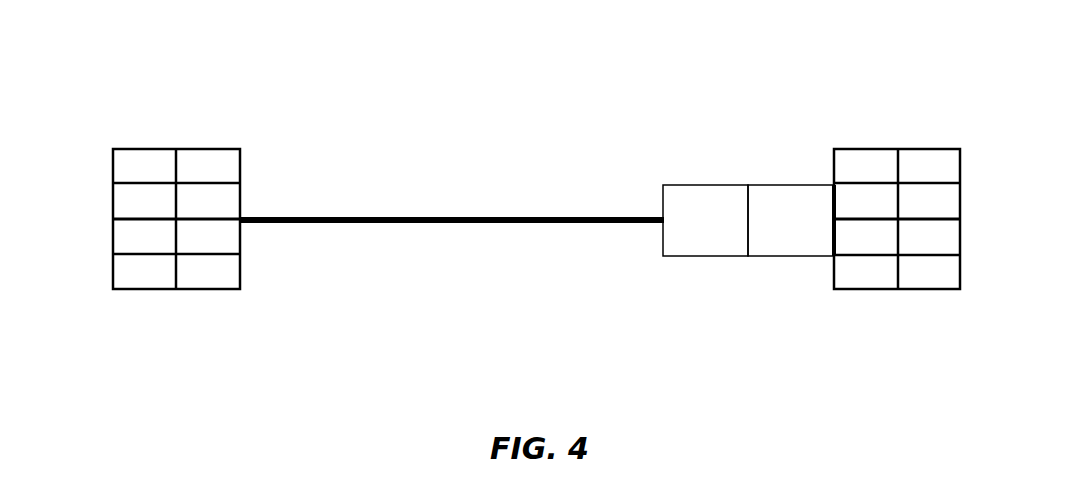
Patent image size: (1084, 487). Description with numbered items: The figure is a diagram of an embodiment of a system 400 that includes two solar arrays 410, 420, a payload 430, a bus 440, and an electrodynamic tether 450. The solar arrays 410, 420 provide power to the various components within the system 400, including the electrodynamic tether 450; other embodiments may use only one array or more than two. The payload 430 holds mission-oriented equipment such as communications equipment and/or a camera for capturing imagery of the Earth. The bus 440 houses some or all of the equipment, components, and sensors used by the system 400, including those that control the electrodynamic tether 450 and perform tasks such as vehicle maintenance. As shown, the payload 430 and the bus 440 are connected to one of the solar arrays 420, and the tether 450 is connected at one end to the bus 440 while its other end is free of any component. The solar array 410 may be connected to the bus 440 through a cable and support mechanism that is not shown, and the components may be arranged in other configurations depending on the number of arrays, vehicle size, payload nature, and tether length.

The system 400 is at (100, 63).
The solar array 410 is at (168, 289).
The solar array 420 is at (878, 289).
The payload 430 is at (786, 256).
The bus 440 is at (706, 256).
The electrodynamic tether 450 is at (478, 224).